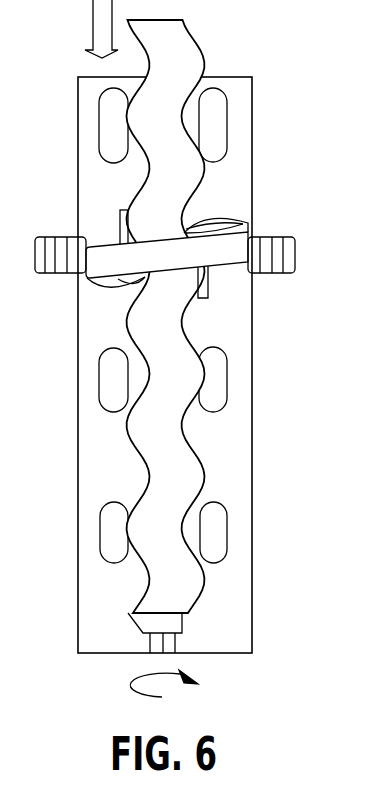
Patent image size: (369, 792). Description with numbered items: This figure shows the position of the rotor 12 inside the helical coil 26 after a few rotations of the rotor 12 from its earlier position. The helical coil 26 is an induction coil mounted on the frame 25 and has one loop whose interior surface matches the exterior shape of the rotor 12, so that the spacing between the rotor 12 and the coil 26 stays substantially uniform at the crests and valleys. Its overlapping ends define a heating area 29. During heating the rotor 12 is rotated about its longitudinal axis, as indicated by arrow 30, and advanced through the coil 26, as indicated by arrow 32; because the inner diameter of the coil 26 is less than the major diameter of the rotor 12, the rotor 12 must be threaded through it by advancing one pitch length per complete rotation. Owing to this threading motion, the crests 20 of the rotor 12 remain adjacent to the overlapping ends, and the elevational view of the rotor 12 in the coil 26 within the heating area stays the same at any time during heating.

The rotor 12 is at (172, 62).
The crests 20 is at (125, 232).
The frame 25 is at (103, 482).
The helical coil 26 is at (240, 228).
The heating area 29 is at (147, 264).
The arrow 30 is at (132, 693).
The arrow 32 is at (95, 32).